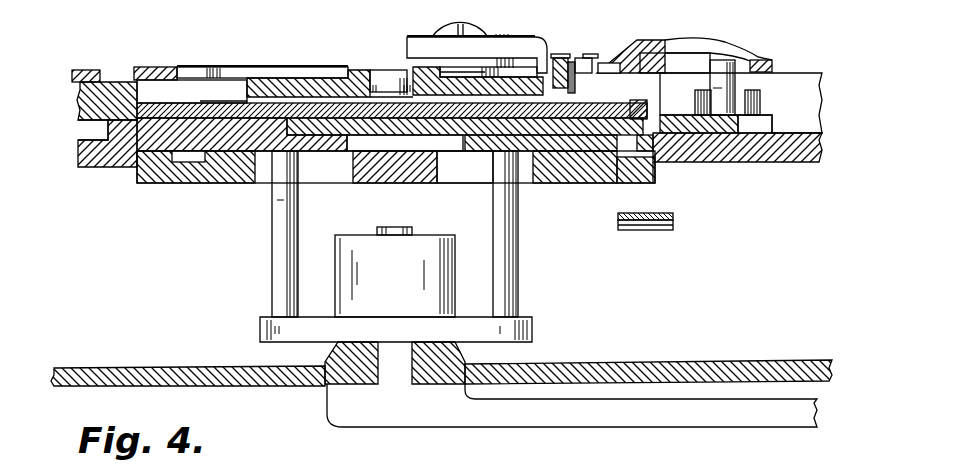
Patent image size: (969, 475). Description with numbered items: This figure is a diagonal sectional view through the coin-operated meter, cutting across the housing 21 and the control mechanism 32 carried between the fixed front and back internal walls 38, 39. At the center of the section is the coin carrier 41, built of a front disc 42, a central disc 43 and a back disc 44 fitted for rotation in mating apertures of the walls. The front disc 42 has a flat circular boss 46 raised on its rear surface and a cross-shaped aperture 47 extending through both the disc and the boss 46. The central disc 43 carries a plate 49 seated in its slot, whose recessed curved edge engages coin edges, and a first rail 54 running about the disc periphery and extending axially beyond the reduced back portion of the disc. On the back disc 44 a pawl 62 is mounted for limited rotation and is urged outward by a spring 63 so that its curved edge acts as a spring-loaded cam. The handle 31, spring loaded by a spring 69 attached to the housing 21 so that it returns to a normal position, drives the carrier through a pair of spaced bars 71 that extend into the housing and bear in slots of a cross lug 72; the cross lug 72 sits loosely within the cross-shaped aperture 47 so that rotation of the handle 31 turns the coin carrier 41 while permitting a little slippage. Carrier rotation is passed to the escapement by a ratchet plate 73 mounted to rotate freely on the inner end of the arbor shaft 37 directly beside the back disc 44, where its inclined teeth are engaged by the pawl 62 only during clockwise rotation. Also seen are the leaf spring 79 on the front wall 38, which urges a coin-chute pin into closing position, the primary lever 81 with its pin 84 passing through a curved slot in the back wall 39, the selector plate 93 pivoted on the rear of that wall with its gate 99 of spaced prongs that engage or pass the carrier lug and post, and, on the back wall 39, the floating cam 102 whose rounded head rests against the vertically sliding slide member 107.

The housing 21 is at (243, 375).
The handle 31 is at (614, 422).
The control mechanism 32 is at (572, 243).
The arbor shaft 37 is at (388, 72).
The front wall 38 is at (96, 164).
The back wall 39 is at (80, 103).
The coin carrier 41 is at (664, 177).
The front disc 42 is at (570, 183).
The central disc 43 is at (190, 183).
The back disc 44 is at (630, 110).
The boss 46 is at (603, 181).
The cross-shaped aperture 47 is at (470, 180).
The plate 49 is at (350, 137).
The first rail 54 is at (142, 110).
The pawl 62 is at (574, 98).
The spring 63 is at (231, 104).
The spring 69 is at (404, 295).
The bars 71 is at (272, 286).
The cross lug 72 is at (398, 183).
The ratchet plate 73 is at (278, 80).
The leaf spring 79 is at (655, 229).
The primary lever 81 is at (682, 113).
The pin 84 is at (736, 84).
The selector plate 93 is at (688, 40).
The gate 99 is at (576, 57).
The floating cam 102 is at (150, 67).
The slide member 107 is at (86, 70).